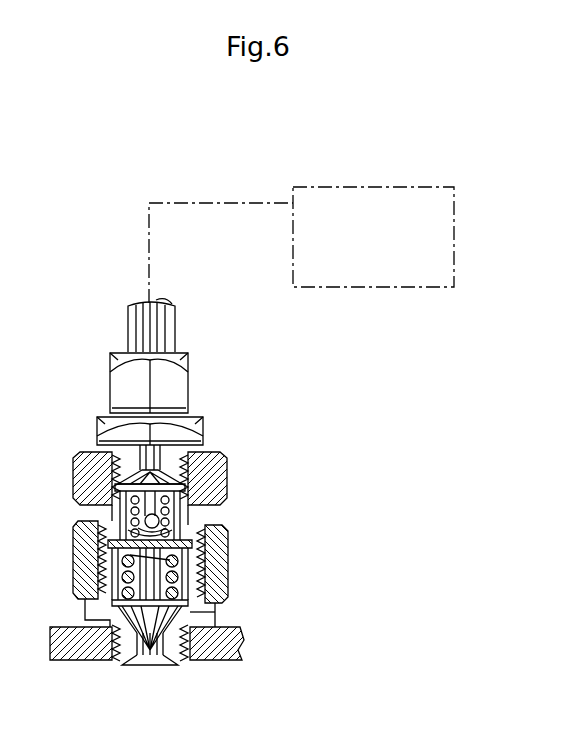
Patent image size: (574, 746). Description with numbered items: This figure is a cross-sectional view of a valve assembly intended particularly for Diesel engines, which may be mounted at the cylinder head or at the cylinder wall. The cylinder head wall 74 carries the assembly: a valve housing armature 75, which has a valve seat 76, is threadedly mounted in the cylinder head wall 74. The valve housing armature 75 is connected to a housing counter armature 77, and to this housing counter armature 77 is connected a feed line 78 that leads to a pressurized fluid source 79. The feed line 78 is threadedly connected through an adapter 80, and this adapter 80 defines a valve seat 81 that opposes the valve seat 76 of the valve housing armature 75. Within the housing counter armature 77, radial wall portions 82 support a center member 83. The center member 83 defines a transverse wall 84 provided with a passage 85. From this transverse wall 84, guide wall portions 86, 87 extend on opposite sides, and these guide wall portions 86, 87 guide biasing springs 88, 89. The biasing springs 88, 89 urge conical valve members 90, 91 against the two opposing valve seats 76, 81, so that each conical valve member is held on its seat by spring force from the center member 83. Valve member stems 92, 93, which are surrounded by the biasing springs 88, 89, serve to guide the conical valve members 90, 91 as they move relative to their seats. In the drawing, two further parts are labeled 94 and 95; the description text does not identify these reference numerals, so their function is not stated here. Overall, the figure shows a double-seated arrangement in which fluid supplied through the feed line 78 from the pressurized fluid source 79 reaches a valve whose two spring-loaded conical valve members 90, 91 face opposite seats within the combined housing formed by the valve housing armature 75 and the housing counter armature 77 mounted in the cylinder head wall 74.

The cylinder head wall 74 is at (237, 650).
The valve housing armature 75 is at (208, 591).
The valve seat 76 is at (187, 660).
The housing counter armature 77 is at (220, 472).
The feed line 78 is at (149, 262).
The pressurized fluid source 79 is at (444, 258).
The adapter 80 is at (203, 441).
The valve seat 81 is at (113, 450).
The radial wall portions 82 is at (125, 517).
The center member 83 is at (115, 565).
The transverse wall 84 is at (73, 537).
The passage 85 is at (120, 627).
The guide wall portion 86 is at (178, 523).
The guide wall portion 87 is at (183, 558).
The biasing spring 88 is at (187, 498).
The biasing spring 89 is at (120, 593).
The conical valve member 90 is at (168, 447).
The conical valve member 91 is at (153, 660).
The valve member stem 92 is at (115, 458).
The valve member stem 93 is at (213, 612).
The spring 94 is at (180, 530).
The guide sleeve 95 is at (105, 492).